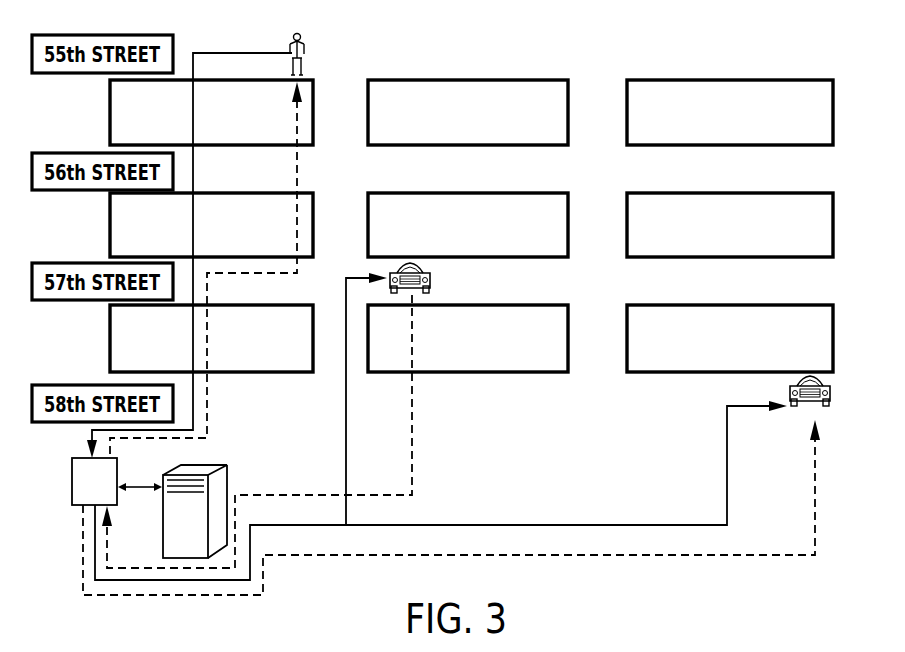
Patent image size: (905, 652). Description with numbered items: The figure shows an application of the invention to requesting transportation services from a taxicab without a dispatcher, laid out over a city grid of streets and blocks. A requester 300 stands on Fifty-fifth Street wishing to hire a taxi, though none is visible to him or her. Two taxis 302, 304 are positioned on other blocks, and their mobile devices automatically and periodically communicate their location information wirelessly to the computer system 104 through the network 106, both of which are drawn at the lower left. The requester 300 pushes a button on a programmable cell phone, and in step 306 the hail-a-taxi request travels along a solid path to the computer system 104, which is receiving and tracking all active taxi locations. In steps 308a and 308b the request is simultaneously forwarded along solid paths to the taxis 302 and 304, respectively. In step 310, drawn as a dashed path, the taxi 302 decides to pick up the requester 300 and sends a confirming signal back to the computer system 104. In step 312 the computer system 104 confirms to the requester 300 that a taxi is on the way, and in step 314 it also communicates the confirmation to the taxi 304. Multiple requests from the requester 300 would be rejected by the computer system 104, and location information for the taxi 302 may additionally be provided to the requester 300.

The computer system 104 is at (170, 534).
The network 106 is at (78, 494).
The requester 300 is at (348, 66).
The taxi 302 is at (434, 283).
The taxi 304 is at (785, 397).
The hail a taxi request step 306 is at (189, 244).
The request forwarding step 308a is at (241, 426).
The request forwarding step 308b is at (566, 463).
The confirming signal step 310 is at (280, 431).
The requester confirmation step 312 is at (225, 270).
The taxi confirmation step 314 is at (451, 507).